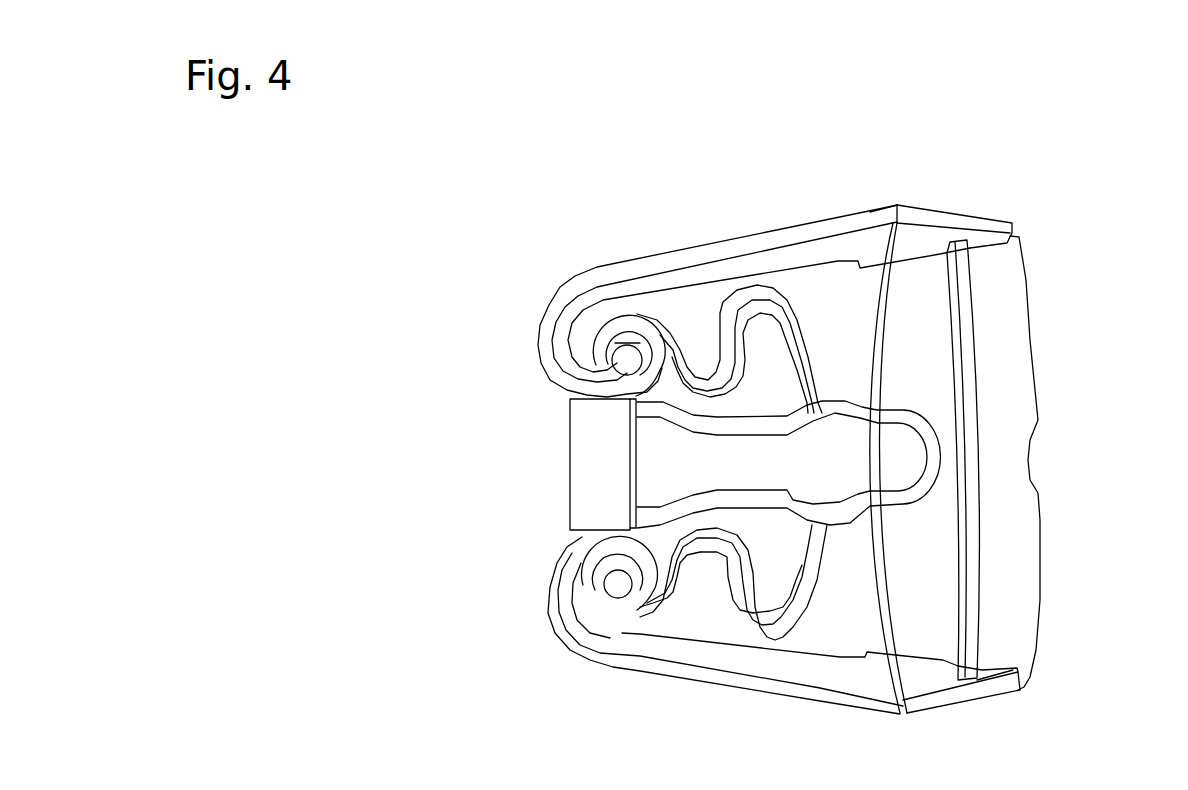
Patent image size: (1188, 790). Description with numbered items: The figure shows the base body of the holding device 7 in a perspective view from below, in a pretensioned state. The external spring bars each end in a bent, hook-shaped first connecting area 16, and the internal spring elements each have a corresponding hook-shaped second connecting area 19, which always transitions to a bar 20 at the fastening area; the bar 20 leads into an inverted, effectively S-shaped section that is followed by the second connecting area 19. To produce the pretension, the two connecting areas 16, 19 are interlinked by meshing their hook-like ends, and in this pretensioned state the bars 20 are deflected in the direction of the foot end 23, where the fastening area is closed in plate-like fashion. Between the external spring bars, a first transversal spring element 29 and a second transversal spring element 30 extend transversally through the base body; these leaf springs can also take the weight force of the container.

The holding device 7 is at (420, 709).
The first connecting area 16 is at (633, 577).
The second connecting area 19 is at (620, 563).
The bar 20 is at (812, 358).
The foot end 23 is at (560, 459).
The first transversal spring element 29 is at (968, 635).
The second transversal spring element 30 is at (877, 583).